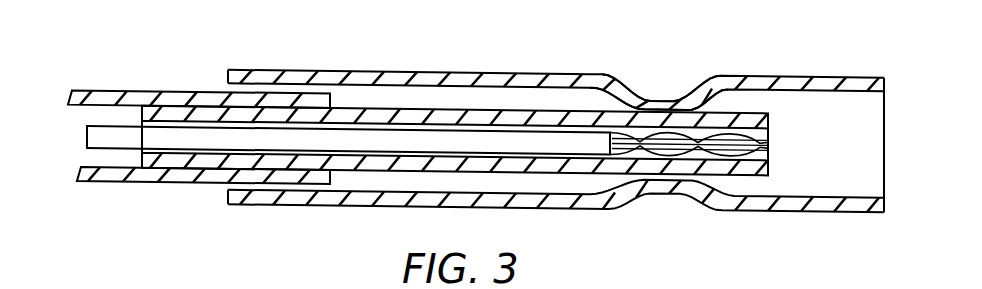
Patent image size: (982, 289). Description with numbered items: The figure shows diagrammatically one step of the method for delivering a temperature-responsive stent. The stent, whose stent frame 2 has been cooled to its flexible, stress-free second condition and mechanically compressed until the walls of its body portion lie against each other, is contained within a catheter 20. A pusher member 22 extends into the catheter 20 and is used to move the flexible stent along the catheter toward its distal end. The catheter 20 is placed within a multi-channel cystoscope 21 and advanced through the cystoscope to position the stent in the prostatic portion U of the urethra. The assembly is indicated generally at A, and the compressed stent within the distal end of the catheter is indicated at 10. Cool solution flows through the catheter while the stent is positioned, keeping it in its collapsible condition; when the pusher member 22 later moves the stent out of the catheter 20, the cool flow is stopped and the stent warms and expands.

The outer tube assembly A is at (337, 70).
The prostatic portion of the urethra U is at (672, 93).
The stent frame 2 is at (727, 137).
The core conductor 10 is at (765, 135).
The catheter 20 is at (515, 108).
The multi-channel cystoscope 21 is at (156, 92).
The pusher member 22 is at (122, 138).